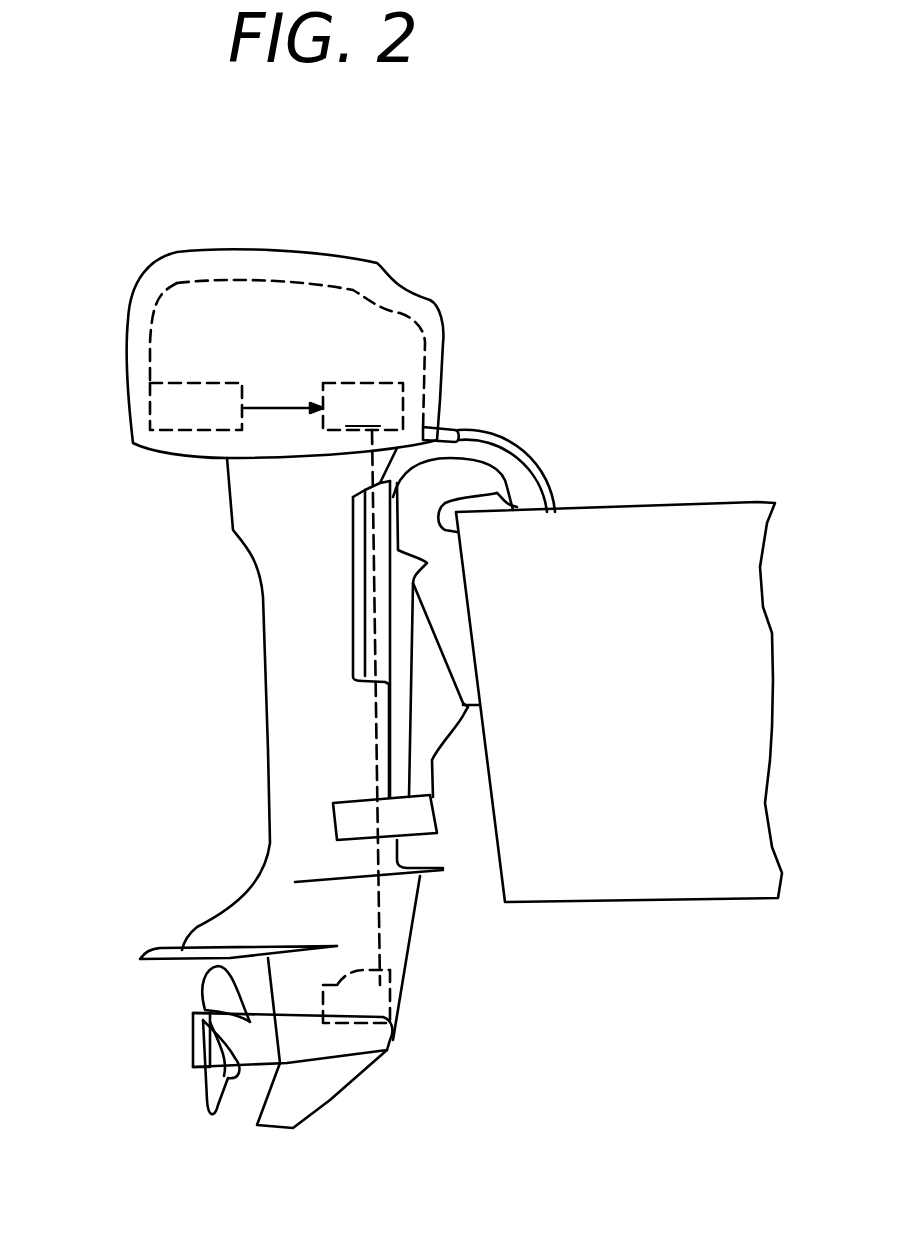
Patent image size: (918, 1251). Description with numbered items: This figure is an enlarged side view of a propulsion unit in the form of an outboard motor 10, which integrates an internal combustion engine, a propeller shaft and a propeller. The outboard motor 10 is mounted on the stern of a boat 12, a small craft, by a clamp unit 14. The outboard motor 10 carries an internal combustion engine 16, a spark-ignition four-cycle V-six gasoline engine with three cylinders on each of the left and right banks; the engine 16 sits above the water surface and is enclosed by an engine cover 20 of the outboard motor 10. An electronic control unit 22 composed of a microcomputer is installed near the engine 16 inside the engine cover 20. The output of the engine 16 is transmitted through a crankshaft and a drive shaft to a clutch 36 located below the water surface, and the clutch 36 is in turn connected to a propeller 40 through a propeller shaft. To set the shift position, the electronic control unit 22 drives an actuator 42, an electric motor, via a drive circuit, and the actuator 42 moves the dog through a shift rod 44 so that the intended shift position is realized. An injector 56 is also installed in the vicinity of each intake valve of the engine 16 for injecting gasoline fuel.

The outboard motor 10 is at (500, 413).
The boat 12 is at (628, 735).
The clamp unit 14 is at (467, 607).
The internal combustion engine 16 is at (413, 323).
The engine cover 20 is at (348, 260).
The electronic control unit (ECU) 22 is at (197, 380).
The clutch 36 is at (390, 970).
The propeller 40 is at (208, 1105).
The actuator (electric motor) 42 is at (363, 684).
The shift rod 44 is at (370, 608).
The injector 56 is at (550, 477).